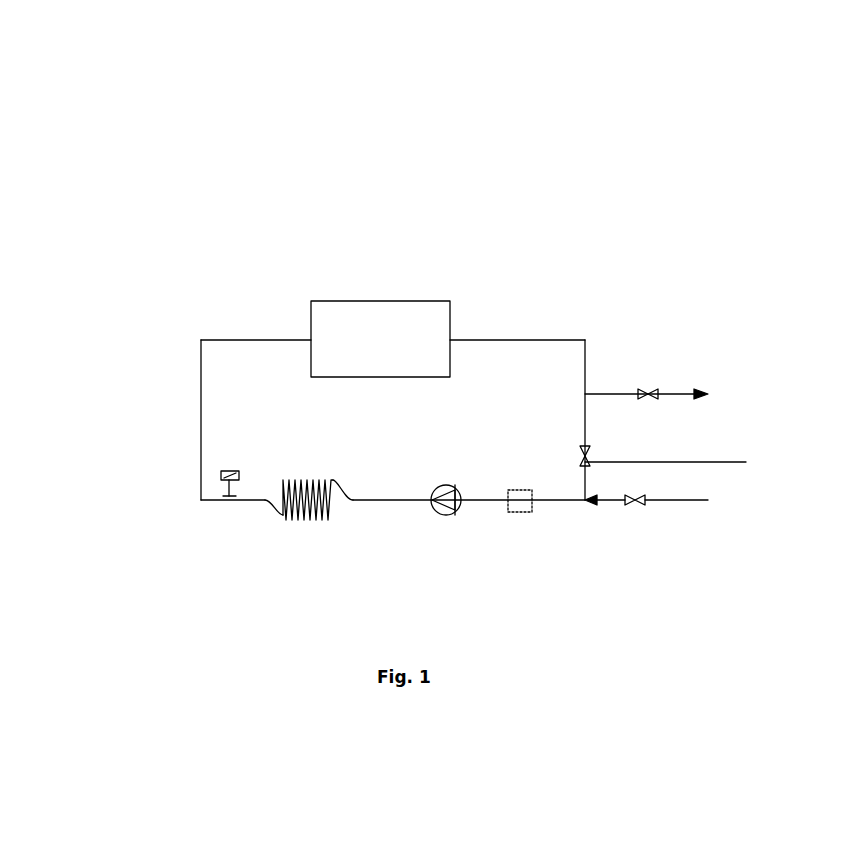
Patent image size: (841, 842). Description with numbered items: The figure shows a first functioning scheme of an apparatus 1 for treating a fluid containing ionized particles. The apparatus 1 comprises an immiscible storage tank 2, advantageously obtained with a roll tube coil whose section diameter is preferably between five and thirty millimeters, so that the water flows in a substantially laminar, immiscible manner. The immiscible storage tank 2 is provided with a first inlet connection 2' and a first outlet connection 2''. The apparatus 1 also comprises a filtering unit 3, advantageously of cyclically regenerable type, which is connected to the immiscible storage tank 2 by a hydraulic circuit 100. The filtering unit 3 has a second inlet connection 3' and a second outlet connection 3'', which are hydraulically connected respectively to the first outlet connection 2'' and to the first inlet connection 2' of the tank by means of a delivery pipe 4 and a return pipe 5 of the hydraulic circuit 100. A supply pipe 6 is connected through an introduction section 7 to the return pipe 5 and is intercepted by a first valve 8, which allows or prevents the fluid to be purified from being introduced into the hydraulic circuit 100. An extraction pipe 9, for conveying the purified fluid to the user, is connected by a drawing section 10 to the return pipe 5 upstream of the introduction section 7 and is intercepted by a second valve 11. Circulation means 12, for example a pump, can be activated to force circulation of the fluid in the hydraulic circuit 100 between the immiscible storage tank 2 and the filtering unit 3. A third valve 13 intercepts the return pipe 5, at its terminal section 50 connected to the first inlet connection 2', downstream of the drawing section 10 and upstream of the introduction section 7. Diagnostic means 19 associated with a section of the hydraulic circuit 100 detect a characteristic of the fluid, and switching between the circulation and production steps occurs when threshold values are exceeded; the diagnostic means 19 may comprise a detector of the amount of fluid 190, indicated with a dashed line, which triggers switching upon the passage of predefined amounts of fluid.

The apparatus 1 is at (796, 76).
The hydraulic circuit 100 is at (90, 265).
The immiscible storage tank 2 is at (309, 520).
The first inlet connection 2' is at (367, 478).
The first outlet connection 2'' is at (254, 528).
The filtering unit 3 is at (417, 297).
The second inlet connection 3' is at (288, 301).
The second outlet connection 3'' is at (517, 316).
The delivery pipe 4 is at (202, 397).
The return pipe 5 is at (572, 340).
The supply pipe 6 is at (697, 500).
The introduction section 7 is at (585, 504).
The first valve 8 is at (632, 505).
The extraction pipe 9 is at (615, 394).
The drawing section 10 is at (584, 394).
The second valve 11 is at (656, 386).
The circulation means 12 is at (441, 515).
The third valve 13 is at (680, 463).
The diagnostic means 19 is at (215, 500).
The terminal section 50 is at (585, 420).
The detector of the amount of fluid 190 is at (525, 514).